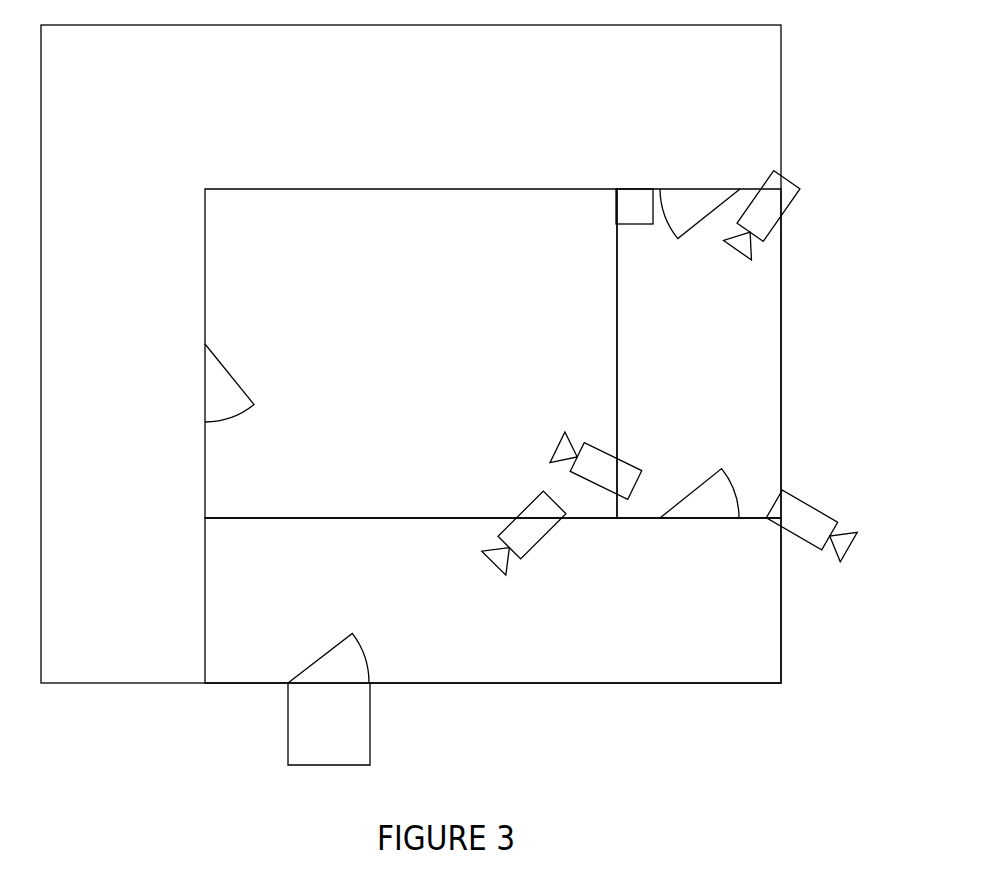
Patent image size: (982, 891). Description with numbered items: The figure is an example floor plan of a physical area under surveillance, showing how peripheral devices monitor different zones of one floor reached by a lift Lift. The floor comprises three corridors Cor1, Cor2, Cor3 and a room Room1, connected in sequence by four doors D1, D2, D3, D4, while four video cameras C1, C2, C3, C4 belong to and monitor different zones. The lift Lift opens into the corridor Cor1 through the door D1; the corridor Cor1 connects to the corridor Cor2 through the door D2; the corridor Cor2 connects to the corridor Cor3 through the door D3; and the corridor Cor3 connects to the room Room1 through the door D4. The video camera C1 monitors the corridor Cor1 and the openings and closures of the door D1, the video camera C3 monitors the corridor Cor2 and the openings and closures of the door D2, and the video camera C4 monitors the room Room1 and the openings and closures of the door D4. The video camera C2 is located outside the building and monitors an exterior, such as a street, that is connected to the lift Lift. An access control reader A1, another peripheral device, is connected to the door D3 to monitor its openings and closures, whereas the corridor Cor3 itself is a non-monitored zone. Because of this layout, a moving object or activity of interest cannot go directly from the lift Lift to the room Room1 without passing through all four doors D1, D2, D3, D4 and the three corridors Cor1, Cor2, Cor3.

The corridor Cor3 is at (411, 354).
The room Room1 is at (411, 353).
The corridor Cor2 is at (699, 353).
The corridor Cor1 is at (493, 600).
The lift Lift is at (329, 724).
The access control reader A1 is at (634, 206).
The door D1 is at (328, 658).
The door D2 is at (699, 493).
The door D3 is at (700, 214).
The door D4 is at (229, 383).
The video camera C1 is at (524, 532).
The video camera C2 is at (811, 525).
The video camera C3 is at (762, 215).
The video camera C4 is at (596, 466).